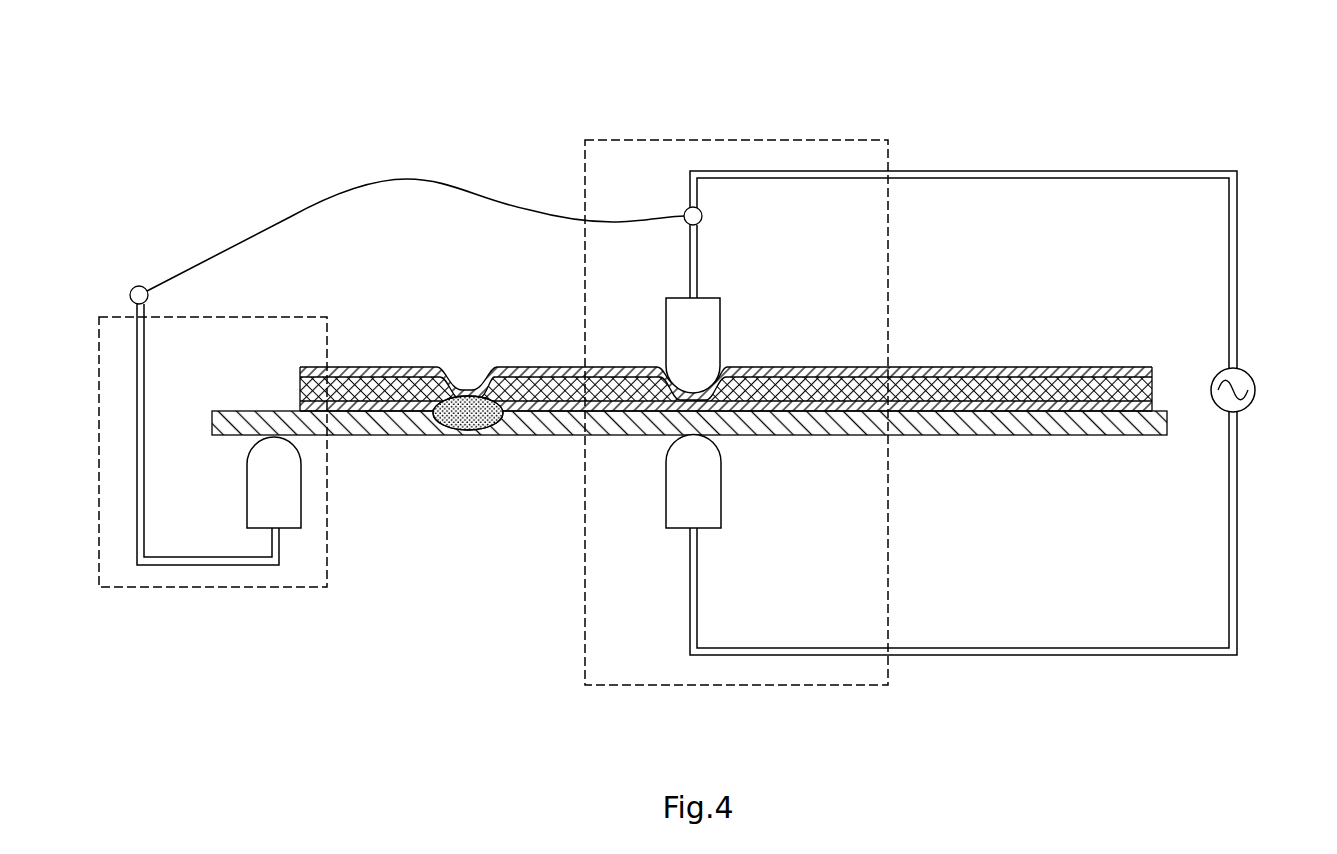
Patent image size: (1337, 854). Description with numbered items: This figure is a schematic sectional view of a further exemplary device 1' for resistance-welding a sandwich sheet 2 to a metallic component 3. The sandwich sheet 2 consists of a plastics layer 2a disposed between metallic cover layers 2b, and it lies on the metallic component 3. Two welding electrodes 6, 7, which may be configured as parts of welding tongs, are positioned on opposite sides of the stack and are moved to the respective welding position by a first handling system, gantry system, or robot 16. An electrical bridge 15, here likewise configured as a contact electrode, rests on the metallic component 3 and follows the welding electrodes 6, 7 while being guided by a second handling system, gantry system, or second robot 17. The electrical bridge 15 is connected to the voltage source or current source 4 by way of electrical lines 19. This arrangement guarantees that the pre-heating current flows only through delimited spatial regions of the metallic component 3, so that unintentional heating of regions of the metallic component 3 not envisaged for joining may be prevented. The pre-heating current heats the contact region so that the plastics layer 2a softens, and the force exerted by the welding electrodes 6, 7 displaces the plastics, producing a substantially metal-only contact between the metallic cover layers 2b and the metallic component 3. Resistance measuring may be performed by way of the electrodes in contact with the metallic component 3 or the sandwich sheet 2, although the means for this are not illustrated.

The device 1' is at (960, 347).
The sandwich sheet 2 is at (726, 384).
The plastics layer 2a is at (1100, 388).
The metallic cover layer 2b is at (1045, 372).
The metallic component 3 is at (943, 423).
The voltage source or current source 4 is at (1257, 378).
The welding electrode 6 is at (708, 327).
The welding electrode 7 is at (708, 499).
The electrical bridge 15 is at (278, 537).
The robot 16 is at (817, 688).
The second robot 17 is at (173, 588).
The electrical lines 19 is at (370, 182).